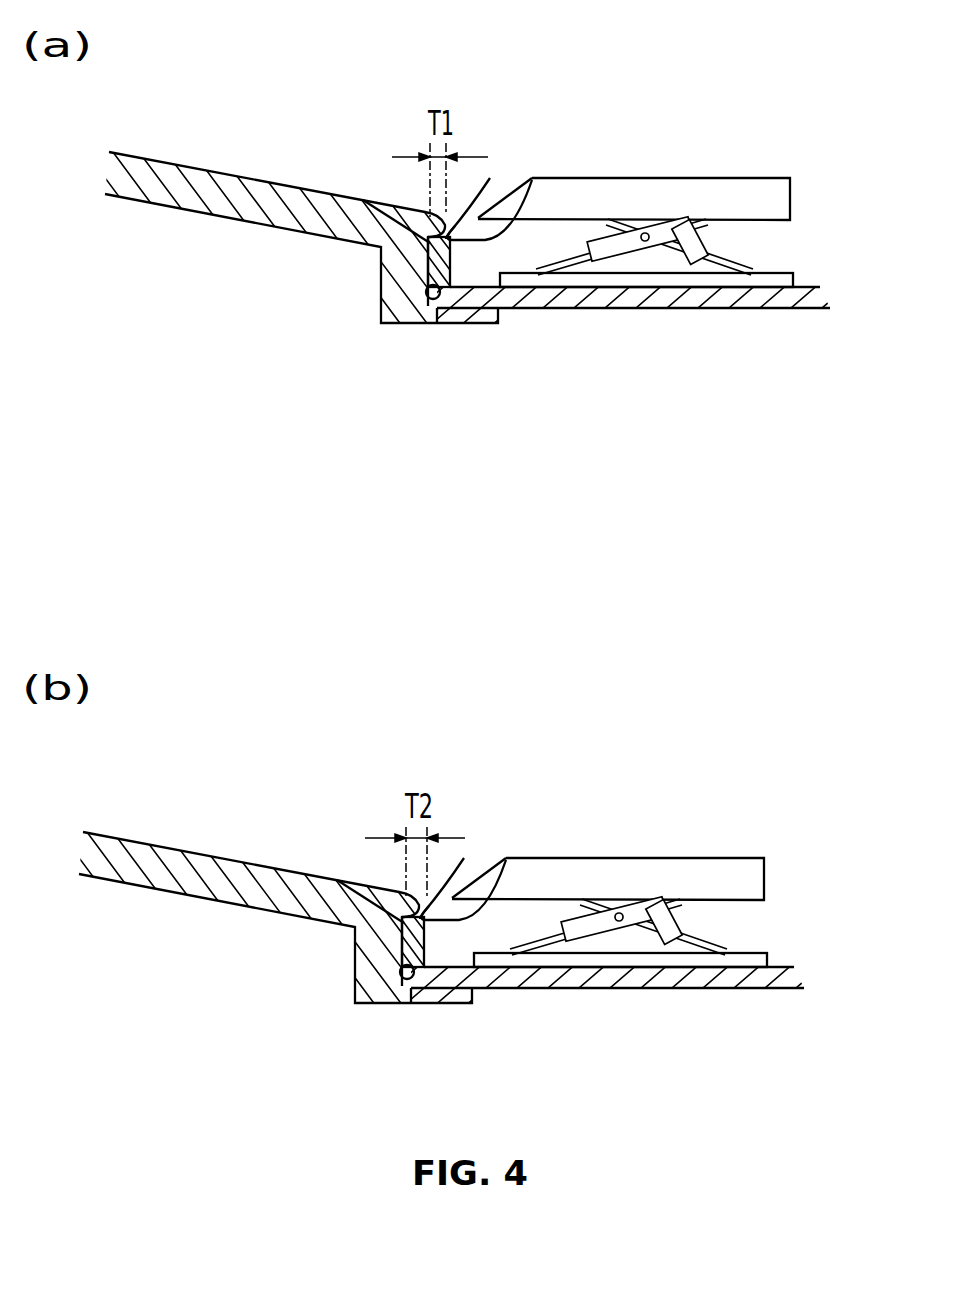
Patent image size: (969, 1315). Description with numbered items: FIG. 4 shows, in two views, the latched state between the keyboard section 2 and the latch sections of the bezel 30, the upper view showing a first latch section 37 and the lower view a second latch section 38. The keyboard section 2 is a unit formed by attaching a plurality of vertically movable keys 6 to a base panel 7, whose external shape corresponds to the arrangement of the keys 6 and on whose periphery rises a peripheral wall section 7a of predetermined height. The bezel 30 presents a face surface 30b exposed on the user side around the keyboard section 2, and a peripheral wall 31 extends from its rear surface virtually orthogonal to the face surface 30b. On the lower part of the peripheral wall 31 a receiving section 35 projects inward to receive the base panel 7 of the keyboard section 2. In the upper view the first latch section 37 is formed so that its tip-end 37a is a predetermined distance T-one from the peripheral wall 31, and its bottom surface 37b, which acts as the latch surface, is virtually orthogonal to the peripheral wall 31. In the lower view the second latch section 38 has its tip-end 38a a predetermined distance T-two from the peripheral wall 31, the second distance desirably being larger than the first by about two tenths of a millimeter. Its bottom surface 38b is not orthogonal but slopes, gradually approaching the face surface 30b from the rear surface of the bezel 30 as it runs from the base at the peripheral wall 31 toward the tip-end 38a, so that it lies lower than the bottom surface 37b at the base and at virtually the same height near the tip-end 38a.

The bezel 30 is at (192, 164).
The face surface 30b is at (249, 177).
The peripheral wall 31 is at (432, 308).
The receiving section 35 is at (450, 263).
The first latch section 37 is at (428, 198).
The tip-end 37a is at (490, 178).
The bottom surface 37b is at (533, 179).
The second latch section 38 is at (418, 870).
The tip-end 38a is at (476, 853).
The bottom surface 38b is at (522, 862).
The key 6 is at (680, 185).
The keyboard section 2 is at (778, 178).
The base panel 7 is at (802, 310).
The peripheral wall section 7a is at (482, 322).